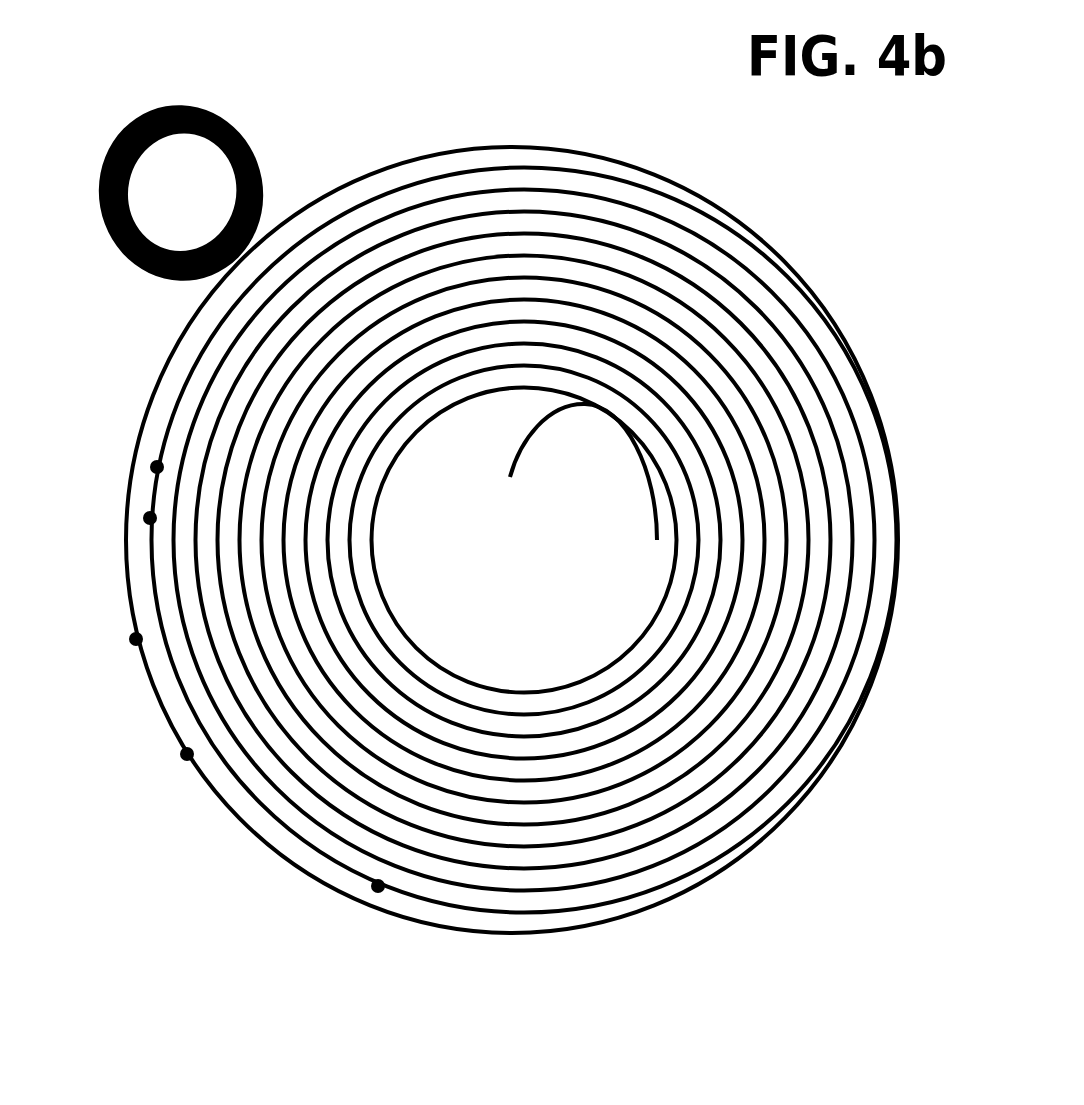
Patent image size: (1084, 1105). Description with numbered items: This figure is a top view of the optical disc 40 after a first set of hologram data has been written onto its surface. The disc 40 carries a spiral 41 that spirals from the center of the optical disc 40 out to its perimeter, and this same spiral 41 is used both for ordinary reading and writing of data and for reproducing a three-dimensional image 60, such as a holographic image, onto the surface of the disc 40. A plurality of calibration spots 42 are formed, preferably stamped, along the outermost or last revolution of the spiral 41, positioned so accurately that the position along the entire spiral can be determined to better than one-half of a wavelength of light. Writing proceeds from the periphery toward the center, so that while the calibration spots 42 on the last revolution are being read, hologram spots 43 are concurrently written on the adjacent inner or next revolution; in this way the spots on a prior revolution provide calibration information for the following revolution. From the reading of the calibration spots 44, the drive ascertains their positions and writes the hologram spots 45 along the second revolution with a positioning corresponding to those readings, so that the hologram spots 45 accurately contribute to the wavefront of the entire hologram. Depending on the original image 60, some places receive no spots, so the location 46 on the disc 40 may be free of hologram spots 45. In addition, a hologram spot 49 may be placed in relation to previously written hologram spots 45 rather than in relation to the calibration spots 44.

The optical disc 40 is at (507, 579).
The spiral 41 is at (576, 472).
The calibration spots 42 is at (255, 828).
The hologram spots 43 is at (278, 824).
The calibration spots 44 is at (187, 754).
The hologram spots 45 is at (150, 512).
The location 46 is at (723, 855).
The hologram spot 49 is at (387, 892).
The three-dimensional image 60 is at (262, 188).